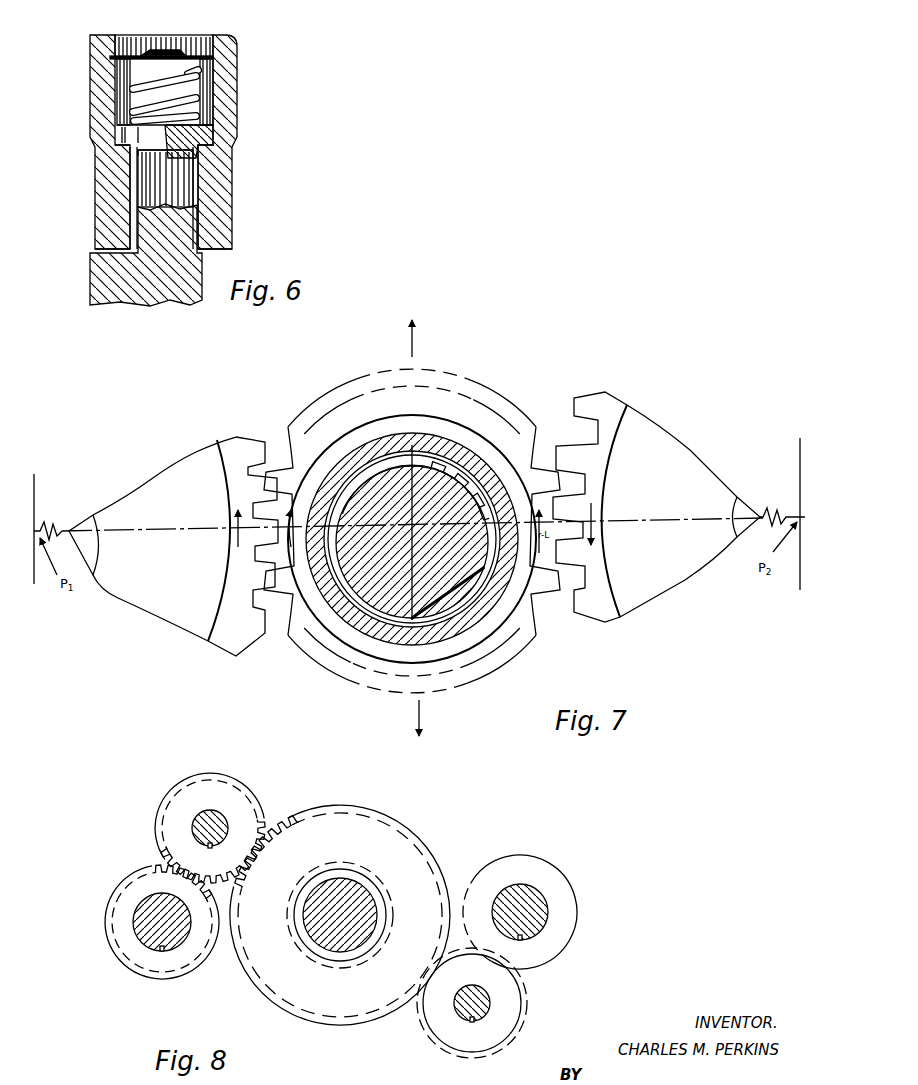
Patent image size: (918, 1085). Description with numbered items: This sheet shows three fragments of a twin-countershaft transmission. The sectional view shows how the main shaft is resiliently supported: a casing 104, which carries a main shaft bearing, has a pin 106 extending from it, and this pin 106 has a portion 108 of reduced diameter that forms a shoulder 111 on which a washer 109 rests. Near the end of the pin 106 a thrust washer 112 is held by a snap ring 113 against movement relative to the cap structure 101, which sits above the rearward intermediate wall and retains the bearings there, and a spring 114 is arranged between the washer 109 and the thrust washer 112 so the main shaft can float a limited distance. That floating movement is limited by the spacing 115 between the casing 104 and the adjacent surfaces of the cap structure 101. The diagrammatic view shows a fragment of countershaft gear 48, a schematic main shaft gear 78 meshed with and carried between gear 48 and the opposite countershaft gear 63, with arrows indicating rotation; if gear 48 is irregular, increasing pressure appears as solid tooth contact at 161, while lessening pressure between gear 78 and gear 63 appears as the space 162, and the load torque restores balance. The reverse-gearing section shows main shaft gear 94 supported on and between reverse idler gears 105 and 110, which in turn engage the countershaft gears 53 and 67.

In FIG. 6, the cap structure 101 is at (228, 35).
In FIG. 6, the casing 104 is at (93, 292).
In FIG. 6, the pin 106 is at (183, 185).
In FIG. 6, the portion of reduced diameter 108 is at (192, 90).
In FIG. 6, the washer 109 is at (210, 133).
In FIG. 6, the shoulder 111 is at (198, 150).
In FIG. 6, the thrust washer 112 is at (213, 58).
In FIG. 6, the snap ring 113 is at (193, 37).
In FIG. 6, the spring 114 is at (203, 103).
In FIG. 6, the spacing 115 is at (90, 251).
In FIG. 7, the countershaft ratio gear 48 is at (157, 488).
In FIG. 7, the countershaft ratio gear 63 is at (683, 454).
In FIG. 7, the main shaft gear 78 is at (489, 639).
In FIG. 7, the solid tooth contact 161 is at (252, 533).
In FIG. 7, the space between teeth 162 is at (553, 517).
In FIG. 8, the reverse idler gear 110 is at (207, 788).
In FIG. 8, the second countershaft ratio gear 67 is at (132, 950).
In FIG. 8, the main shaft gear 94 is at (305, 1003).
In FIG. 8, the countershaft ratio gear 53 is at (531, 862).
In FIG. 8, the reverse idler gear 105 is at (470, 1045).